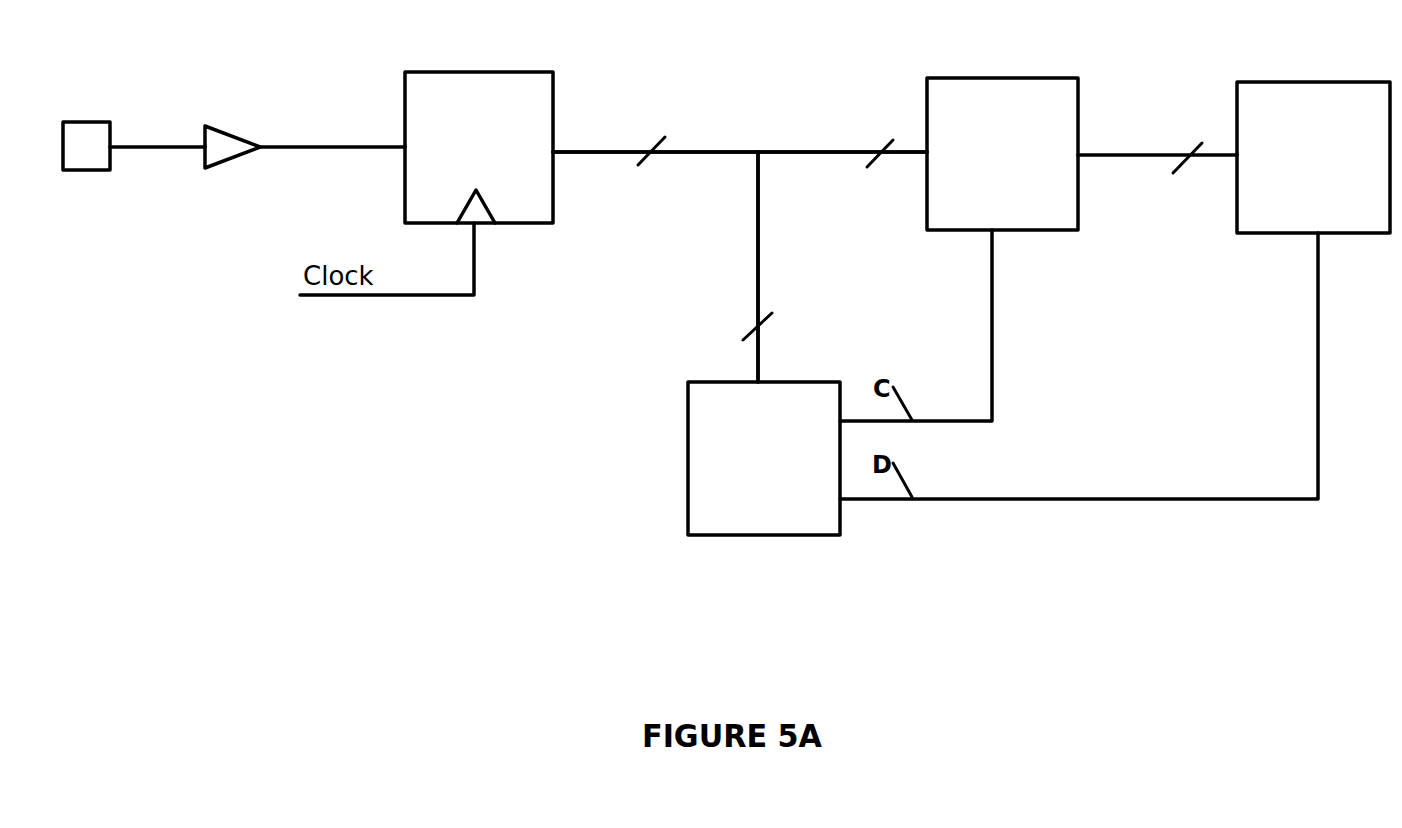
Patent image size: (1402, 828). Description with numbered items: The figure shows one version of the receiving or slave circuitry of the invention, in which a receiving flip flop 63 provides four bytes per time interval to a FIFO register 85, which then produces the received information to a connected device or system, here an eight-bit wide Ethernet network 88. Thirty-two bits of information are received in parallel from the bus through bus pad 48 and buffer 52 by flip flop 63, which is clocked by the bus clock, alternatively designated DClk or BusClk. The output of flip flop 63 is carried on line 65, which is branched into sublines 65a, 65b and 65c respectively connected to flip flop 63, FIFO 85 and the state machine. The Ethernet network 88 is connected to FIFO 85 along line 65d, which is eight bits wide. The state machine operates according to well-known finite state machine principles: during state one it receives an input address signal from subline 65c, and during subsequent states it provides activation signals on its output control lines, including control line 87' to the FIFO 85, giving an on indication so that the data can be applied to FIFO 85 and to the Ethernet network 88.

The bus pad 48 is at (85, 120).
The buffer 52 is at (217, 128).
The receiving flip flop 63 is at (458, 70).
The line 65 is at (730, 104).
The subline 65a is at (572, 148).
The subline 65b is at (783, 149).
The subline 65c is at (757, 213).
The line 65d is at (1090, 150).
The FIFO register 85 is at (982, 77).
The Ethernet network 88 is at (1295, 80).
The control line 87' is at (1079, 366).